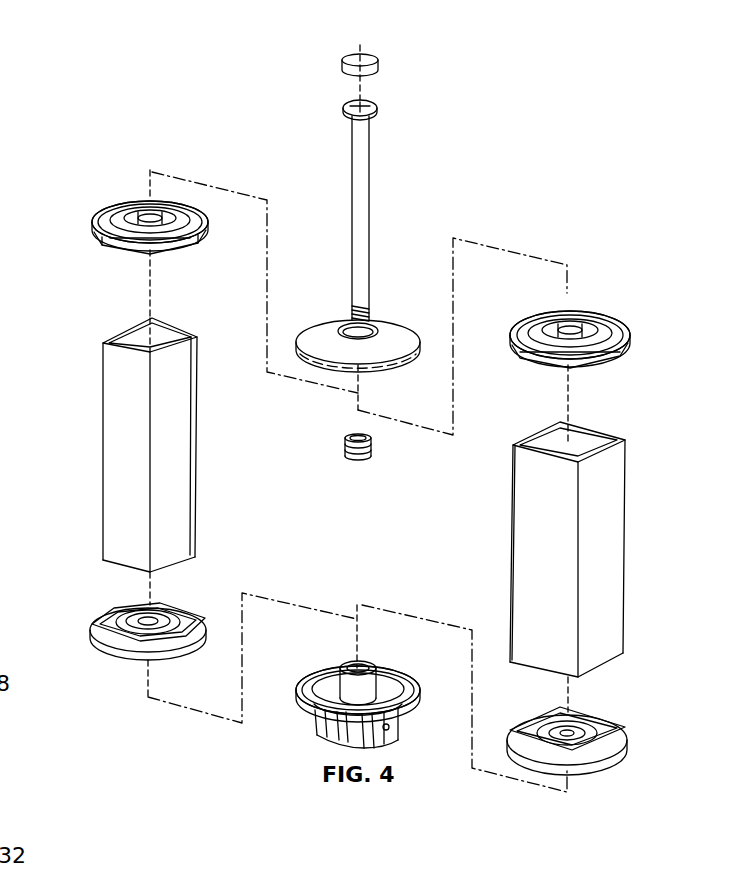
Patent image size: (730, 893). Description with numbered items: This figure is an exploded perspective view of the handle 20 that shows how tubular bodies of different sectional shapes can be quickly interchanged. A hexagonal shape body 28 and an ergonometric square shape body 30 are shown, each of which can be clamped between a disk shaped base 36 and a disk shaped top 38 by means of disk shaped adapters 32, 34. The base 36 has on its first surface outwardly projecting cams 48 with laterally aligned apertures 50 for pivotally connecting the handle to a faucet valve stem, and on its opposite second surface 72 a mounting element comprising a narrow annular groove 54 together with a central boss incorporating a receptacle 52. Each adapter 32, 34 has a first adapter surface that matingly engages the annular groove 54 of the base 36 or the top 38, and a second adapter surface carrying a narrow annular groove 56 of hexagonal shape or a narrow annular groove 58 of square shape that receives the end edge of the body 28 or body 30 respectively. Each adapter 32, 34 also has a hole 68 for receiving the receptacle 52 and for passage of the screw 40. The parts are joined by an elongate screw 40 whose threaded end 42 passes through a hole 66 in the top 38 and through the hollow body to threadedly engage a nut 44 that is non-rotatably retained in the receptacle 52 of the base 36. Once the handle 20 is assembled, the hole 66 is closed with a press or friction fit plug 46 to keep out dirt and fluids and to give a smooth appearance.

The handle 20 is at (490, 188).
The hexagonal shape body 28 is at (202, 438).
The square shape body 30 is at (515, 560).
The adapter 32 is at (92, 232).
The adapter 34 is at (592, 312).
The base 36 is at (318, 732).
The top 38 is at (395, 320).
The screw 40 is at (370, 222).
The threaded end 42 is at (352, 310).
The nut 44 is at (350, 458).
The plug 46 is at (378, 58).
The cams 48 is at (358, 748).
The apertures 50 is at (395, 726).
The receptacle 52 is at (366, 668).
The annular groove 54 is at (103, 208).
The annular groove 56 is at (178, 625).
The annular groove 58 is at (610, 717).
The hole 66 is at (338, 331).
The hole 68 is at (138, 216).
The second surface 72 is at (412, 678).